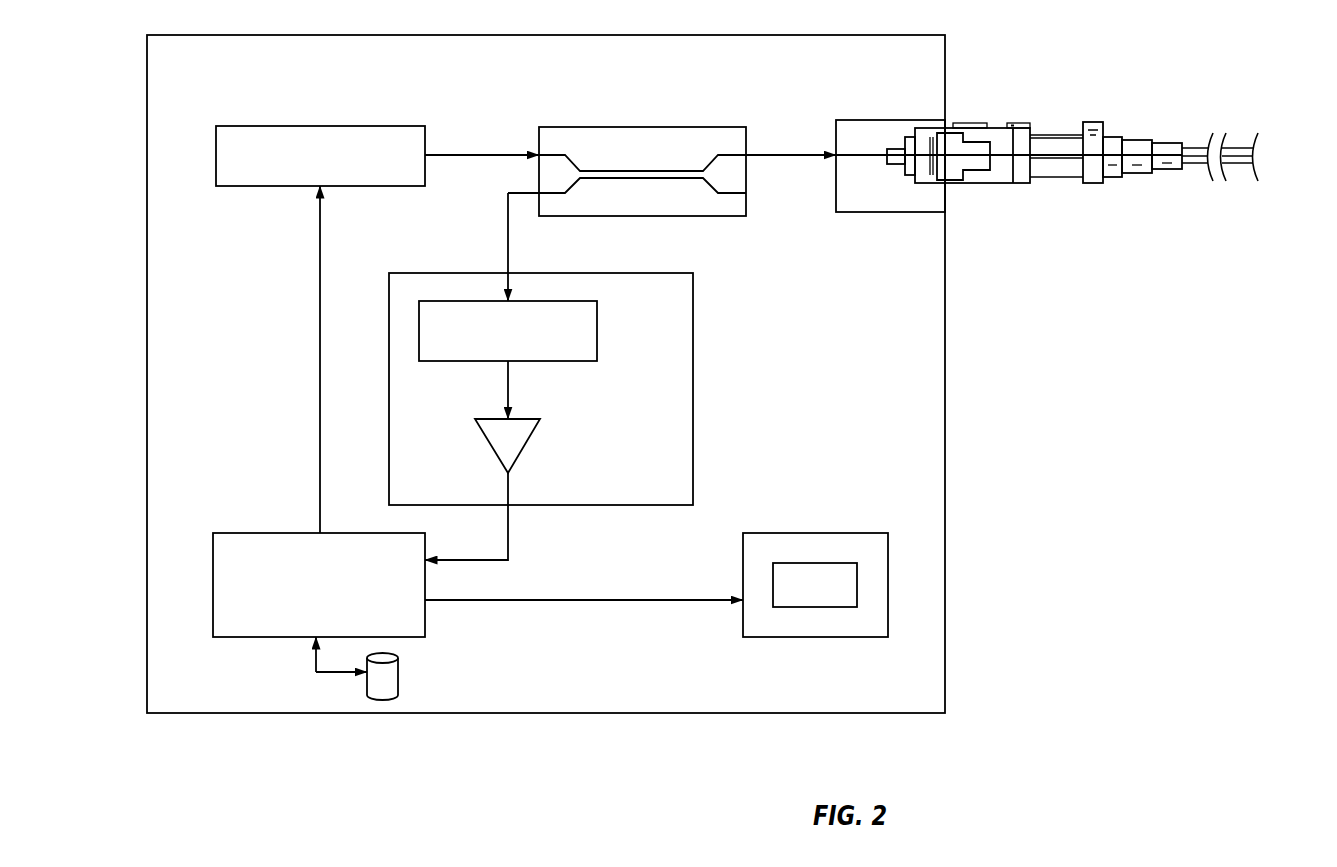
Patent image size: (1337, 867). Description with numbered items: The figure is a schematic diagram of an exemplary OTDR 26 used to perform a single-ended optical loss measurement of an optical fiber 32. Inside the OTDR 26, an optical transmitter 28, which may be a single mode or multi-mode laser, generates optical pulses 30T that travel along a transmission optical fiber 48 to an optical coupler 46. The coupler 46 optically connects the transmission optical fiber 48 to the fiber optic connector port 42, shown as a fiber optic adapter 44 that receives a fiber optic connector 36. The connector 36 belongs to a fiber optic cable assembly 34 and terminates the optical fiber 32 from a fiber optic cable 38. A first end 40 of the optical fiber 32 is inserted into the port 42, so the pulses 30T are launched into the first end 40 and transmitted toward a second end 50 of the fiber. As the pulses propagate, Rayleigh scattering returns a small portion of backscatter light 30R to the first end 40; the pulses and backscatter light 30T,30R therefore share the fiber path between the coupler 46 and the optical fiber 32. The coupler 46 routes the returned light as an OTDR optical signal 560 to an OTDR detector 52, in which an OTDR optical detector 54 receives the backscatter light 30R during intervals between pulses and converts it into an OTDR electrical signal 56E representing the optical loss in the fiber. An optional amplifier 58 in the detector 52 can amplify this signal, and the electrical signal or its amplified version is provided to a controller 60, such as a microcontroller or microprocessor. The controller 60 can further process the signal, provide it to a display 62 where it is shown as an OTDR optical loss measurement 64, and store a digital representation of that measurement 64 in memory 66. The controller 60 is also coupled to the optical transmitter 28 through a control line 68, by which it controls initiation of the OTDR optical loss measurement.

The OTDR 26 is at (699, 34).
The optical transmitter 28 is at (320, 156).
The optical pulses 30T is at (468, 151).
The backscatter light 30R is at (508, 228).
The optical pulses and backscatter light 30T,30R is at (791, 163).
The transmission optical fiber 48 is at (507, 150).
The optical coupler 46 is at (668, 127).
The OTDR optical signal 560 is at (508, 258).
The OTDR detector 52 is at (448, 273).
The OTDR optical detector 54 is at (508, 331).
The OTDR electrical signal 56E is at (510, 385).
The amplifier 58 is at (491, 447).
The controller 60 is at (478, 585).
The control line 68 is at (320, 335).
The memory 66 is at (398, 670).
The display 62 is at (848, 533).
The OTDR optical loss measurement 64 is at (805, 597).
The fiber optic adapter 44 is at (888, 212).
The first end of the optical fiber 40 is at (898, 172).
The fiber optic connector 36 is at (984, 186).
The fiber optic connector port 42 is at (954, 112).
The optical fiber 32 is at (996, 157).
The fiber optic cable assembly 34 is at (1066, 120).
The fiber optic cable 38 is at (1236, 187).
The second end of the optical fiber 50 is at (1253, 114).